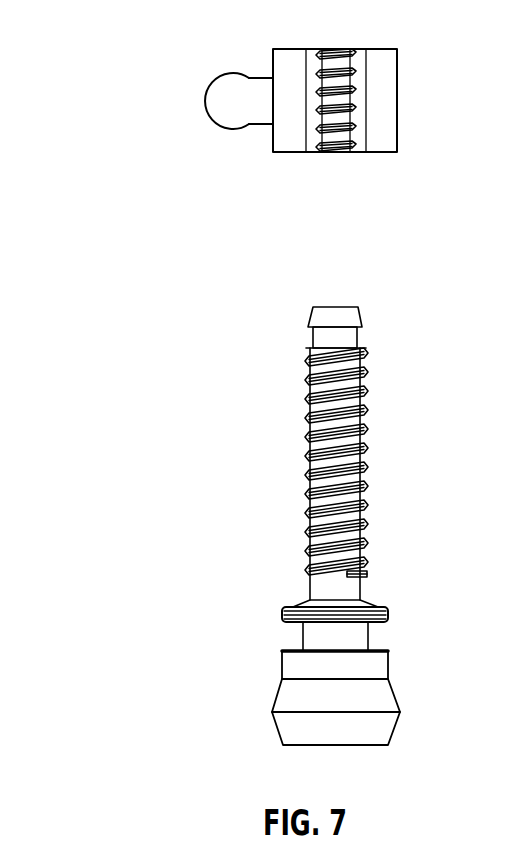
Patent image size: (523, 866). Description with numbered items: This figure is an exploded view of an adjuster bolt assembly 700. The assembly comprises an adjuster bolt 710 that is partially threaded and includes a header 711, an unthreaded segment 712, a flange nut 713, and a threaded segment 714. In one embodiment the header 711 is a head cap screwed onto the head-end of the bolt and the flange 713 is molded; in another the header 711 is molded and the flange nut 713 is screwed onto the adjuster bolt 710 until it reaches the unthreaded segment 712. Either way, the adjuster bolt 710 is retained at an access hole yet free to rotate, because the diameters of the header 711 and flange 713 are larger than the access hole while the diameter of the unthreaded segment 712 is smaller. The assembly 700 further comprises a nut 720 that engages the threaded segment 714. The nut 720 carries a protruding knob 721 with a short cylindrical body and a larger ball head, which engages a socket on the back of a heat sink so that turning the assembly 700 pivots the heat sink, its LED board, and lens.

The adjuster bolt assembly 700 is at (121, 57).
The nut 720 is at (383, 70).
The protruding knob 721 is at (222, 99).
The adjuster bolt 710 is at (265, 468).
The threaded segment 714 is at (380, 367).
The flange nut 713 is at (387, 613).
The unthreaded segment 712 is at (307, 638).
The header 711 is at (390, 695).